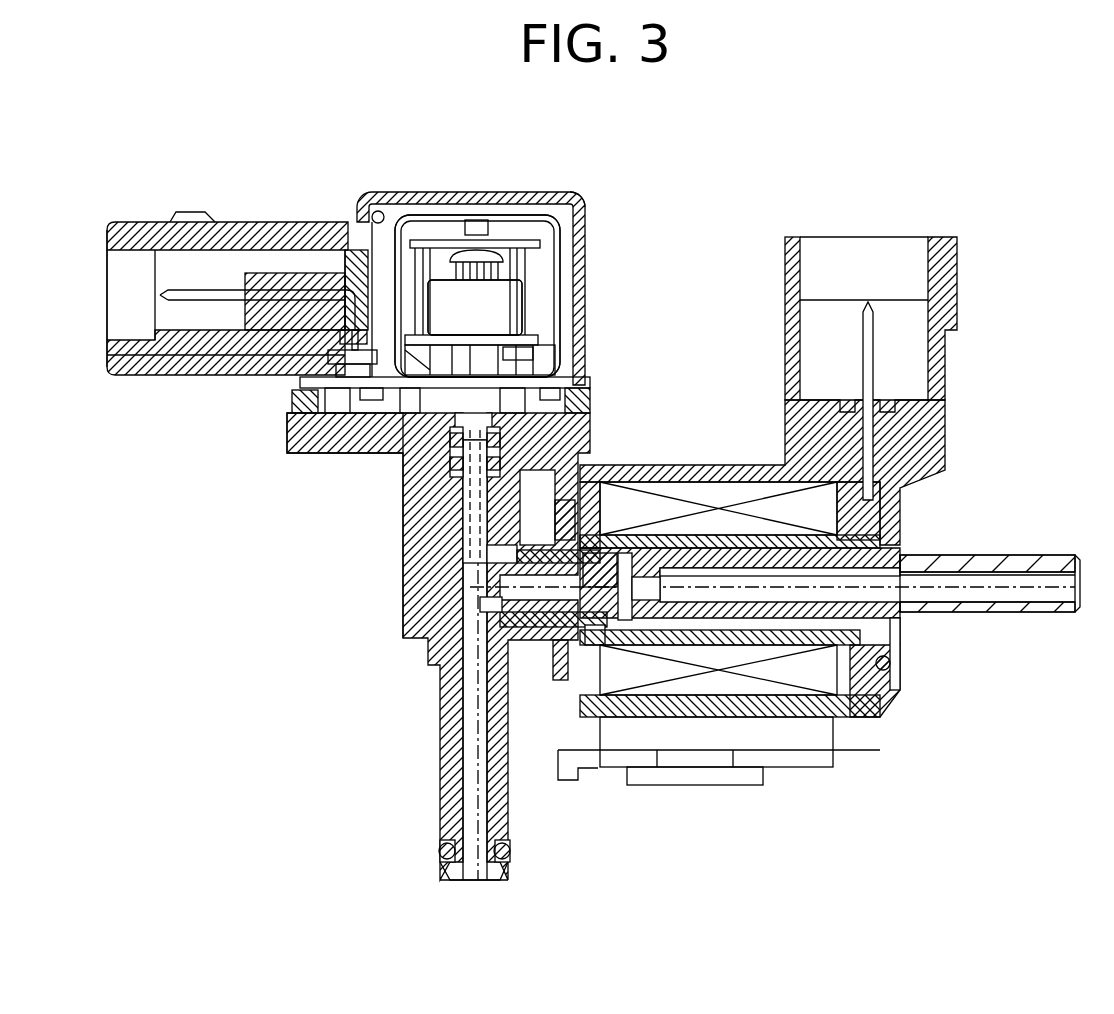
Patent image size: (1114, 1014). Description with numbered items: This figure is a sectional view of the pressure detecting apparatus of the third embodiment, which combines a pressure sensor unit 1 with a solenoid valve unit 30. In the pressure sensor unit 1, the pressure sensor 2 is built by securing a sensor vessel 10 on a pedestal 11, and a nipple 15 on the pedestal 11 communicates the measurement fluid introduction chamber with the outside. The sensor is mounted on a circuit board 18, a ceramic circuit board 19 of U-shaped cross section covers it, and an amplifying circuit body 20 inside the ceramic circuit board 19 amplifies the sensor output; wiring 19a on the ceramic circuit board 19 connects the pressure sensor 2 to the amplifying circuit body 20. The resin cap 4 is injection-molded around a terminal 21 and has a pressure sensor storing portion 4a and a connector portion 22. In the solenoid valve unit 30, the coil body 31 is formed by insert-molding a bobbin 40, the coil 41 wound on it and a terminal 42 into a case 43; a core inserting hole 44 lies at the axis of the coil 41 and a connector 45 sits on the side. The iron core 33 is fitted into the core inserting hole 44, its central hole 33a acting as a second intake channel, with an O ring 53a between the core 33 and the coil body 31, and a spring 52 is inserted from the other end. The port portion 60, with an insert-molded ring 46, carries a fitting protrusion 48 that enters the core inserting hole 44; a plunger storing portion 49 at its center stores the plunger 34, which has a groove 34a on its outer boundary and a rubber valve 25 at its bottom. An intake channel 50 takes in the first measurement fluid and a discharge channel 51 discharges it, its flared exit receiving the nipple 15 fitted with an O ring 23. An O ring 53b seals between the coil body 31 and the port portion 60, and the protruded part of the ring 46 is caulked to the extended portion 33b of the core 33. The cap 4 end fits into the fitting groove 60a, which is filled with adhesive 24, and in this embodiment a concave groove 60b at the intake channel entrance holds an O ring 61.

The pressure sensor unit 1 is at (580, 240).
The pressure sensor 2 is at (525, 312).
The cap 4 is at (330, 210).
The pressure sensor storing portion 4a is at (364, 205).
The sensor vessel 10 is at (505, 287).
The pedestal 11 is at (548, 336).
The nipple 15 is at (597, 393).
The circuit board 18 is at (552, 358).
The ceramic circuit board 19 is at (536, 252).
The wiring 19a is at (580, 213).
The amplifying circuit body 20 is at (483, 255).
The terminal 21 is at (225, 282).
The connector portion 22 is at (227, 205).
The O ring 23 is at (505, 440).
The adhesive 24 is at (292, 398).
The rubber valve 25 is at (640, 600).
The solenoid valve unit 30 is at (417, 713).
The coil body 31 is at (857, 722).
The core 33 is at (1057, 618).
The central hole 33a is at (987, 623).
The extended portion 33b is at (600, 645).
The plunger 34 is at (492, 603).
The groove 34a is at (660, 500).
The bobbin 40 is at (880, 492).
The coil 41 is at (755, 495).
The terminal 42 is at (860, 360).
The case 43 is at (887, 705).
The core inserting hole 44 is at (778, 660).
The connector 45 is at (783, 305).
The ring 46 is at (562, 650).
The fitting protrusion 48 is at (712, 645).
The plunger storing portion 49 is at (495, 608).
The intake channel 50 is at (472, 752).
The discharge channel 51 is at (472, 527).
The spring 52 is at (665, 580).
The O ring 53a is at (903, 663).
The O ring 53b is at (573, 753).
The port portion 60 is at (392, 542).
The fitting groove 60a is at (300, 425).
The concave groove 60b is at (500, 868).
The O ring 61 is at (438, 850).